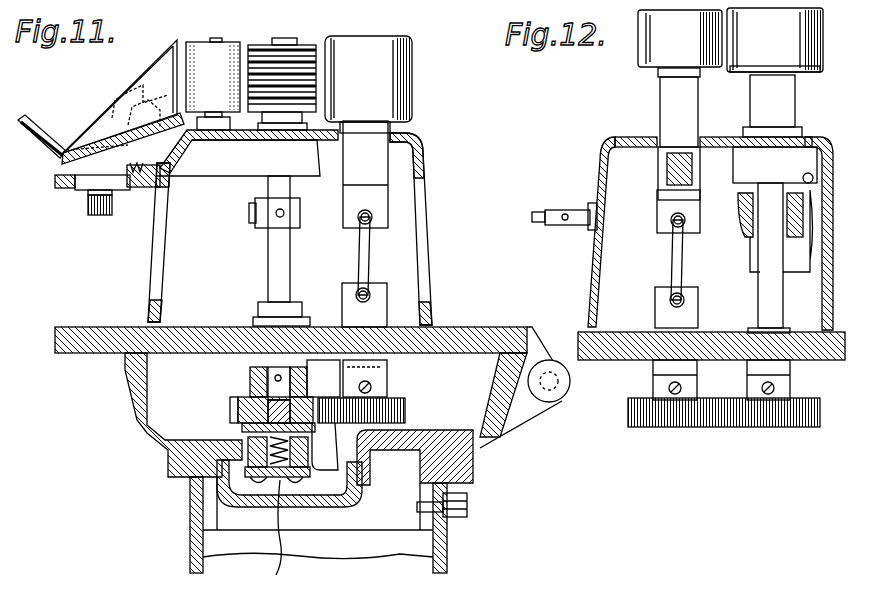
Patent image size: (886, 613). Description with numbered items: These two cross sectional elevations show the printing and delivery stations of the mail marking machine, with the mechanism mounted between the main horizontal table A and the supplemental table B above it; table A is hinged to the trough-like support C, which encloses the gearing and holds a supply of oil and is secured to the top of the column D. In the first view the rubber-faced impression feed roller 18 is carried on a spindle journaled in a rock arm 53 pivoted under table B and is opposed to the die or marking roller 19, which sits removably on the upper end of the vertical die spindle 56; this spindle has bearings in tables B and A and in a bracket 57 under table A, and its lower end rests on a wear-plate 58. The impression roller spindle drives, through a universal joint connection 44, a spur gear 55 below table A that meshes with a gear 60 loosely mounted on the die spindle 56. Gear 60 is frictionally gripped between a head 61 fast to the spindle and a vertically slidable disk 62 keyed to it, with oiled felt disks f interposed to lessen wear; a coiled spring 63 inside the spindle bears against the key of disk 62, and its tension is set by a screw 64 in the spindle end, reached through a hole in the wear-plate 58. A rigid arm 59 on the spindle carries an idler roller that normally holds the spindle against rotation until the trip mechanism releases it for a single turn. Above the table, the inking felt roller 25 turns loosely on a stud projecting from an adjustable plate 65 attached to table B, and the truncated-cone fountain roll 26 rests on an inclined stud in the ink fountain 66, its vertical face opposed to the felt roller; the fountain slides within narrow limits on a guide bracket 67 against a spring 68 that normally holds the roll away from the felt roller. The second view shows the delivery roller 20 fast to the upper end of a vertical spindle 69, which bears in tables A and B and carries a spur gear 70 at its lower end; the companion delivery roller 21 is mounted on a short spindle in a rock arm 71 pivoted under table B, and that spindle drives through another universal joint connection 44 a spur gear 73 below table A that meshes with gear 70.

In FIG. 11, the impression feed roller 18 is at (368, 84).
In FIG. 11, the die or marking roller 19 is at (281, 73).
In FIG. 12, the delivery roller 20 is at (775, 72).
In FIG. 12, the companion delivery roller 21 is at (680, 78).
In FIG. 11, the inking felt roller 25 is at (213, 84).
In FIG. 11, the fountain roll 26 is at (123, 102).
In FIG. 11, the universal joint connection 44 is at (373, 258).
In FIG. 12, the universal joint connection 44 is at (672, 257).
In FIG. 11, the rock arm 53 is at (365, 224).
In FIG. 12, the rock arm 53 is at (812, 240).
In FIG. 11, the spur gear 55 is at (405, 405).
In FIG. 11, the die spindle 56 is at (268, 256).
In FIG. 11, the bracket 57 is at (352, 452).
In FIG. 11, the wear-plate 58 is at (300, 475).
In FIG. 11, the rigid arm 59 is at (250, 213).
In FIG. 11, the gear 60 is at (238, 405).
In FIG. 11, the head 61 is at (250, 372).
In FIG. 11, the vertically slidable disk 62 is at (245, 428).
In FIG. 11, the coiled spring 63 is at (190, 490).
In FIG. 11, the screw 64 is at (269, 534).
In FIG. 11, the adjustable plate 65 is at (214, 140).
In FIG. 11, the ink fountain or trough 66 is at (47, 125).
In FIG. 11, the guide bracket 67 is at (55, 185).
In FIG. 11, the spring 68 is at (140, 195).
In FIG. 12, the vertical spindle 69 is at (762, 284).
In FIG. 12, the spur gear 70 is at (786, 428).
In FIG. 12, the rock arm 71 is at (665, 171).
In FIG. 12, the spur gear 73 is at (655, 428).
In FIG. 11, the main horizontal table A is at (486, 328).
In FIG. 12, the main horizontal table A is at (584, 332).
In FIG. 11, the supplemental table B is at (418, 137).
In FIG. 12, the supplemental table B is at (620, 137).
In FIG. 11, the trough-like support C is at (135, 420).
In FIG. 11, the column D is at (450, 546).
In FIG. 11, the oiled felt disks f is at (347, 415).